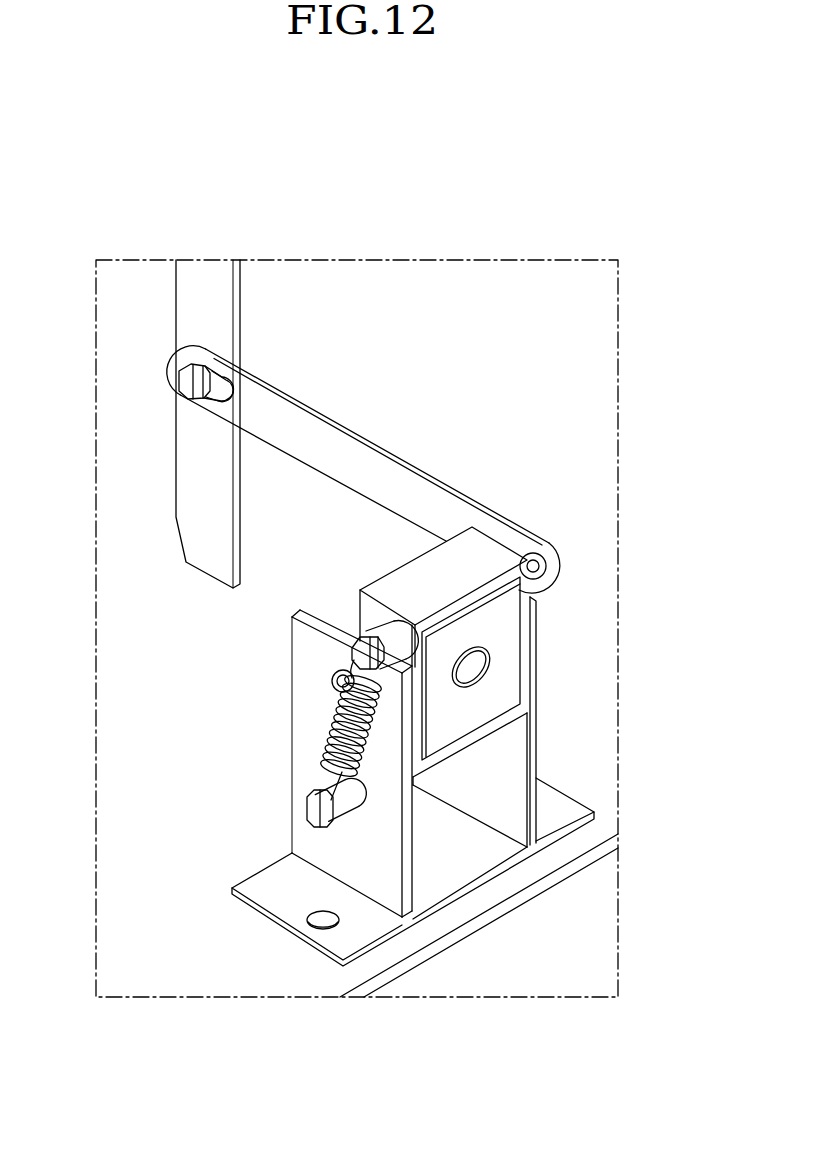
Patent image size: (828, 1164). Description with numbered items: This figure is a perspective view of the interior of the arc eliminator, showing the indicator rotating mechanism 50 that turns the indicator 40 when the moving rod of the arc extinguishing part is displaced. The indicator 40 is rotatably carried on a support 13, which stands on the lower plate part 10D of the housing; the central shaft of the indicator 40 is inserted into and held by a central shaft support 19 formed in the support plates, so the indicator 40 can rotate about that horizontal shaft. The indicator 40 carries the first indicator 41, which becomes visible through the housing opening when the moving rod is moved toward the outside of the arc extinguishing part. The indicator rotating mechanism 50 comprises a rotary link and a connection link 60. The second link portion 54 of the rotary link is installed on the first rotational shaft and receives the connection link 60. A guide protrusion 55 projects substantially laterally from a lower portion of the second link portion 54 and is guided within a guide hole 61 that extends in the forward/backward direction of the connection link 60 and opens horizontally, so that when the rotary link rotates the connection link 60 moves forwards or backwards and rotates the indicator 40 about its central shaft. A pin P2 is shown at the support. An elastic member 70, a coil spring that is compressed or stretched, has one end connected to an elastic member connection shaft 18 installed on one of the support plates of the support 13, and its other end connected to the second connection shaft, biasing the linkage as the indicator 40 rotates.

The indicator rotating mechanism 50 is at (122, 296).
The second link portion 54 is at (190, 457).
The guide protrusion 55 is at (190, 382).
The guide hole 61 is at (222, 372).
The connection link 60 is at (280, 410).
The lower plate part 10D is at (587, 732).
The indicator 40 is at (480, 548).
The first indicator 41 is at (490, 662).
The pin P2 is at (382, 628).
The central shaft support 19 is at (338, 680).
The elastic member 70 is at (337, 734).
The elastic member connection shaft 18 is at (310, 811).
The support 13 is at (262, 874).